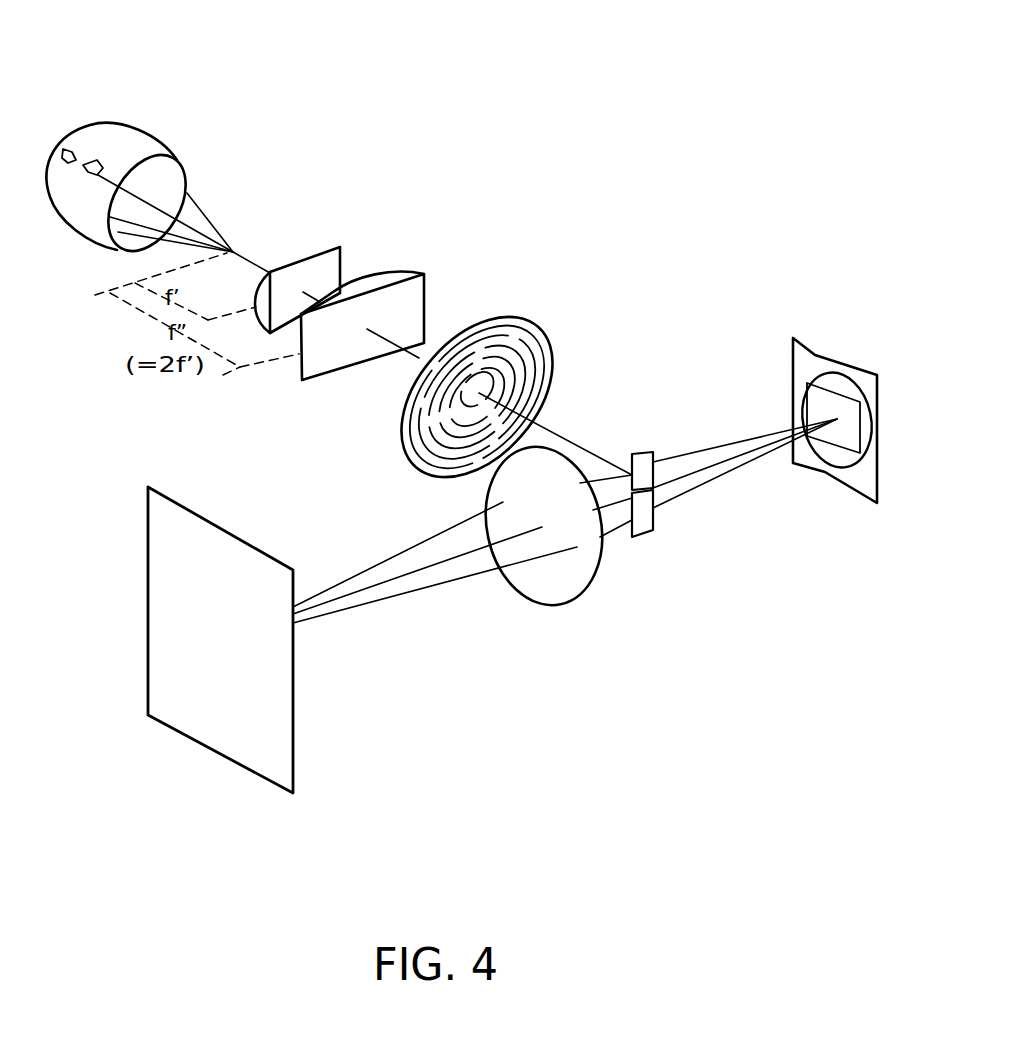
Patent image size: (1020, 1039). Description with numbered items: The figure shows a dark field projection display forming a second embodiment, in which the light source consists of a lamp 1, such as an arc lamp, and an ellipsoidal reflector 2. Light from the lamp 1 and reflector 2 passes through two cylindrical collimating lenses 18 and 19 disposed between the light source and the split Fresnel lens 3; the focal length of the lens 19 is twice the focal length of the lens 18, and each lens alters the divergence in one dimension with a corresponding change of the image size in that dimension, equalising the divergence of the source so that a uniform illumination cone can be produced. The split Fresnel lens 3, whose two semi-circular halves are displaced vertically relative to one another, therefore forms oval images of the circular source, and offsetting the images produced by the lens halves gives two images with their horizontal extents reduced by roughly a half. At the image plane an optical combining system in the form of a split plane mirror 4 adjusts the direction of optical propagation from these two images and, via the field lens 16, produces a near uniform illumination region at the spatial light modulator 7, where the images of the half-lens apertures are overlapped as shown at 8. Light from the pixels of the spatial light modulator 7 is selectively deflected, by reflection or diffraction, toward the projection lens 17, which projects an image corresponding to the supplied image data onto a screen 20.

The lamp 1 is at (83, 172).
The reflector 2 is at (143, 130).
The split Fresnel lens 3 is at (523, 325).
The split plane mirror 4 is at (642, 522).
The spatial light modulator 7 is at (860, 455).
The overlapped images 8 is at (867, 371).
The field lens 16 is at (812, 343).
The projection lens 17 is at (537, 583).
The cylindrical collimating lens 18 is at (315, 260).
The cylindrical collimating lens 19 is at (402, 273).
The screen 20 is at (200, 737).